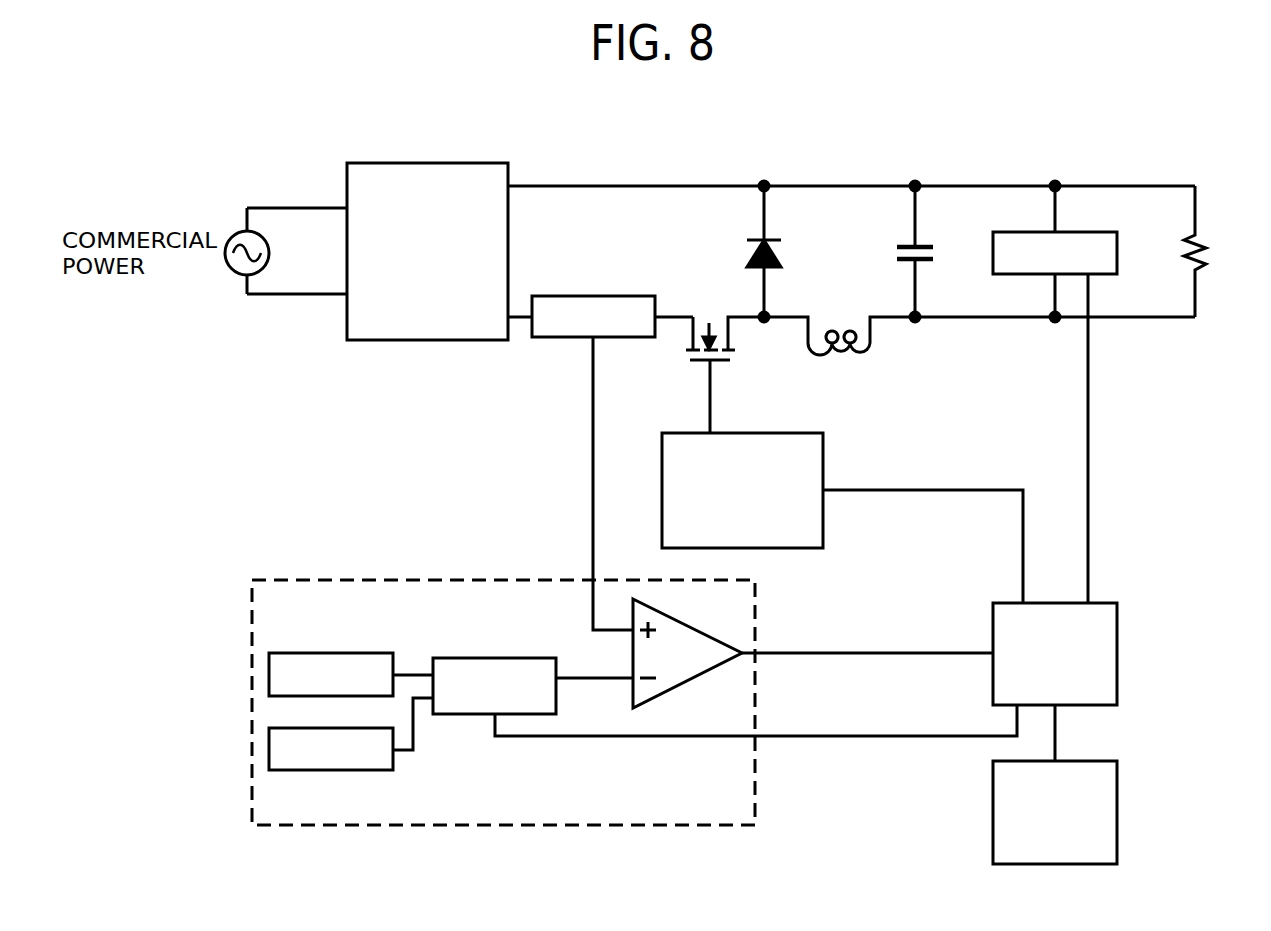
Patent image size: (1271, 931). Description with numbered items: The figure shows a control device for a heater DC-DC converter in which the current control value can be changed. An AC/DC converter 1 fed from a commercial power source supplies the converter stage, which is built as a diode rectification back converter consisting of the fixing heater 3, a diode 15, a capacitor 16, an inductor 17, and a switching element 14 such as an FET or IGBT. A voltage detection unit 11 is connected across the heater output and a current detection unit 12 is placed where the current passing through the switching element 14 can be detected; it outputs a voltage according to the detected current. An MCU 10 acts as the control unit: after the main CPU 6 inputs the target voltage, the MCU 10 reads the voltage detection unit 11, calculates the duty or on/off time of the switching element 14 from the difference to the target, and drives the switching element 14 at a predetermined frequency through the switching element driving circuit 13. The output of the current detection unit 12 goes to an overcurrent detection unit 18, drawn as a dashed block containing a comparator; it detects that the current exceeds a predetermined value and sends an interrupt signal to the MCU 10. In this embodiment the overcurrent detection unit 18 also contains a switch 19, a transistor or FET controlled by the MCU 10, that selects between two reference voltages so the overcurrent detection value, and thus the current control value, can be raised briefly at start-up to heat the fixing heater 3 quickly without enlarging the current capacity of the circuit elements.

The AC/DC converter 1 is at (484, 163).
The fixing heater 3 is at (1205, 247).
The main CPU 6 is at (1097, 761).
The MCU 10 is at (1097, 603).
The voltage detection unit 11 is at (1117, 250).
The current detection unit 12 is at (625, 296).
The switching element driving circuit 13 is at (790, 433).
The switching element 14 is at (690, 360).
The diode 15 is at (771, 240).
The capacitor 16 is at (927, 247).
The inductor 17 is at (862, 357).
The overcurrent detection unit 18 is at (634, 727).
The switch 19 is at (525, 658).